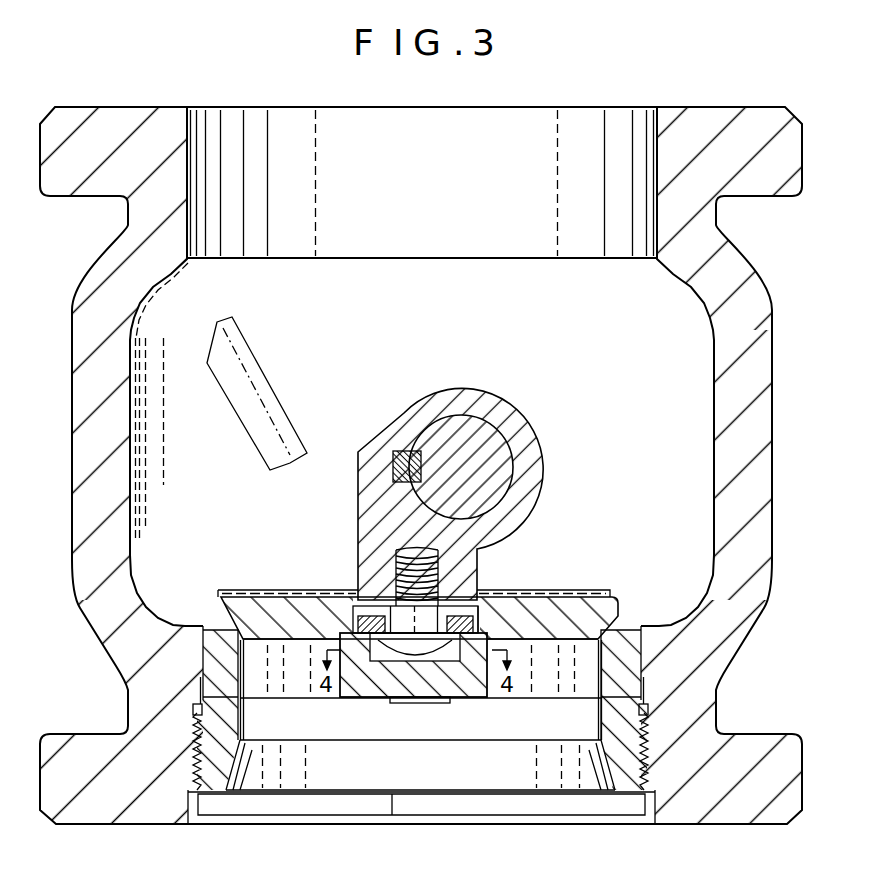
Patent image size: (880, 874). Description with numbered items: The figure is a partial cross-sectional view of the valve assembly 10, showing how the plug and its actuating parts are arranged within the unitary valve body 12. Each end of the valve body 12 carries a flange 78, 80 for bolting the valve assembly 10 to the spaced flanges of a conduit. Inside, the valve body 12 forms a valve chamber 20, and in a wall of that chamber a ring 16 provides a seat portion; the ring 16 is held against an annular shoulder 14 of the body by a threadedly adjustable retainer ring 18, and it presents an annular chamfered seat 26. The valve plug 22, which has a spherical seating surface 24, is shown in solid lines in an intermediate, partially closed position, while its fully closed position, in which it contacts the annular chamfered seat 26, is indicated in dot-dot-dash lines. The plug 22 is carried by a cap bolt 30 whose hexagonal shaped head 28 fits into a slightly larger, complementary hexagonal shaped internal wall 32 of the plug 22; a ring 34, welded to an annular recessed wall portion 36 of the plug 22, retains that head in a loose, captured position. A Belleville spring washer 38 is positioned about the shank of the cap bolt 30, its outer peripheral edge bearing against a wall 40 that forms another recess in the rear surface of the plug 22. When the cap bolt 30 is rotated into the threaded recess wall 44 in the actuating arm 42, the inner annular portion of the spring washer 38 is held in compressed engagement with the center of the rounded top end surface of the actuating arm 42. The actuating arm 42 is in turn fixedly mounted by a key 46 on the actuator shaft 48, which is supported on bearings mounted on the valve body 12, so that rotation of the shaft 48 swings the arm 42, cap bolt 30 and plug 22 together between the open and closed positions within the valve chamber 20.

The valve assembly 10 is at (182, 103).
The valve body 12 is at (72, 312).
The annular shoulder 14 is at (200, 667).
The ring 16 is at (218, 660).
The retainer ring 18 is at (196, 740).
The valve chamber 20 is at (697, 338).
The valve plug 22 is at (276, 398).
The spherical seating surface 24 is at (223, 612).
The annular chamfered seat 26 is at (241, 645).
The hexagonal shaped head 28 is at (447, 665).
The cap bolt 30 is at (385, 622).
The hexagonal shaped internal wall 32 is at (390, 662).
The ring 34 is at (365, 622).
The annular recessed wall portion 36 is at (330, 615).
The Belleville spring washer 38 is at (478, 605).
The wall 40 is at (493, 616).
The actuating arm 42 is at (358, 488).
The threaded recess wall 44 is at (397, 568).
The key 46 is at (401, 451).
The actuator shaft 48 is at (482, 437).
The flange 78 is at (778, 813).
The flange 80 is at (748, 122).